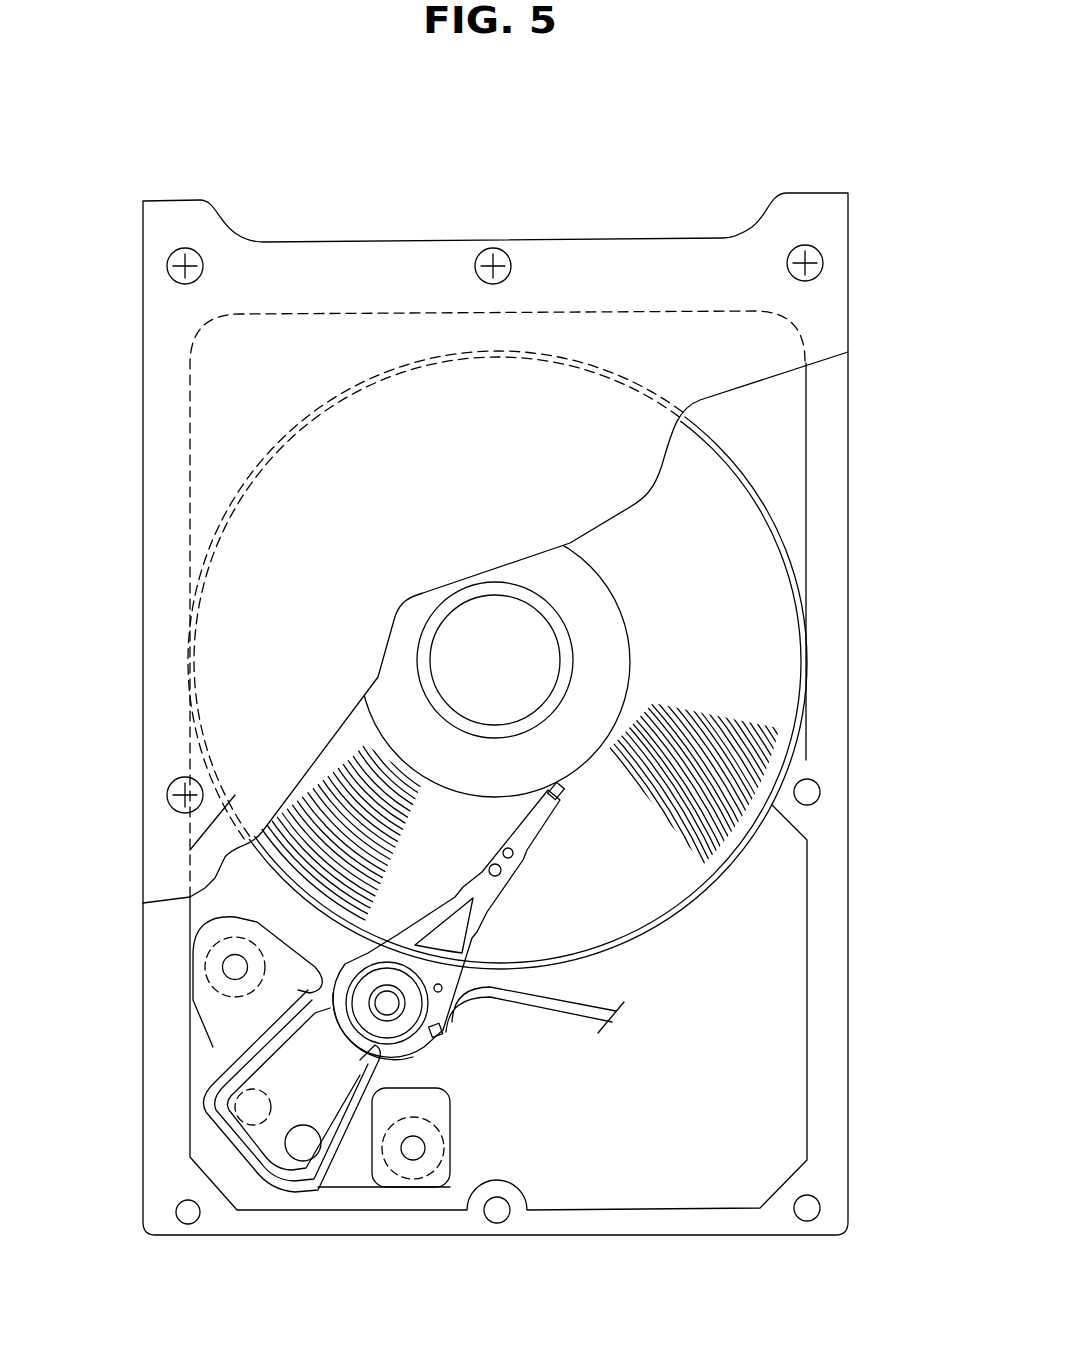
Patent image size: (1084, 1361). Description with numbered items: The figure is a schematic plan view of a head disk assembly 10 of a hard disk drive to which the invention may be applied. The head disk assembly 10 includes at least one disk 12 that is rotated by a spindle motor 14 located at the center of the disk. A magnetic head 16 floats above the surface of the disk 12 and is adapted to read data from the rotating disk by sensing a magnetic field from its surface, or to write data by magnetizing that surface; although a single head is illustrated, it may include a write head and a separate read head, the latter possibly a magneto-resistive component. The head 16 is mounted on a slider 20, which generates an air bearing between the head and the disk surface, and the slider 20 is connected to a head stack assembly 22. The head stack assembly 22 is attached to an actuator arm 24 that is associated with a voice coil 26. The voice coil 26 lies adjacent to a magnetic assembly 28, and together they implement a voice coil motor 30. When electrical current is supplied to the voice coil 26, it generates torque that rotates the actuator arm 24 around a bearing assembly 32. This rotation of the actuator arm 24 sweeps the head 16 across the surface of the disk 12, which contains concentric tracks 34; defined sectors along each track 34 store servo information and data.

The head disk assembly 10 is at (633, 158).
The disk 12 is at (755, 592).
The spindle motor 14 is at (470, 635).
The magnetic head 16 is at (562, 790).
The slider 20 is at (543, 810).
The head stack assembly 22 is at (497, 907).
The actuator arm 24 is at (305, 1025).
The voice coil 26 is at (218, 1092).
The magnetic assembly 28 is at (235, 1037).
The voice coil motor 30 is at (357, 1165).
The bearing assembly 32 is at (398, 1013).
The concentric tracks 34 is at (318, 815).